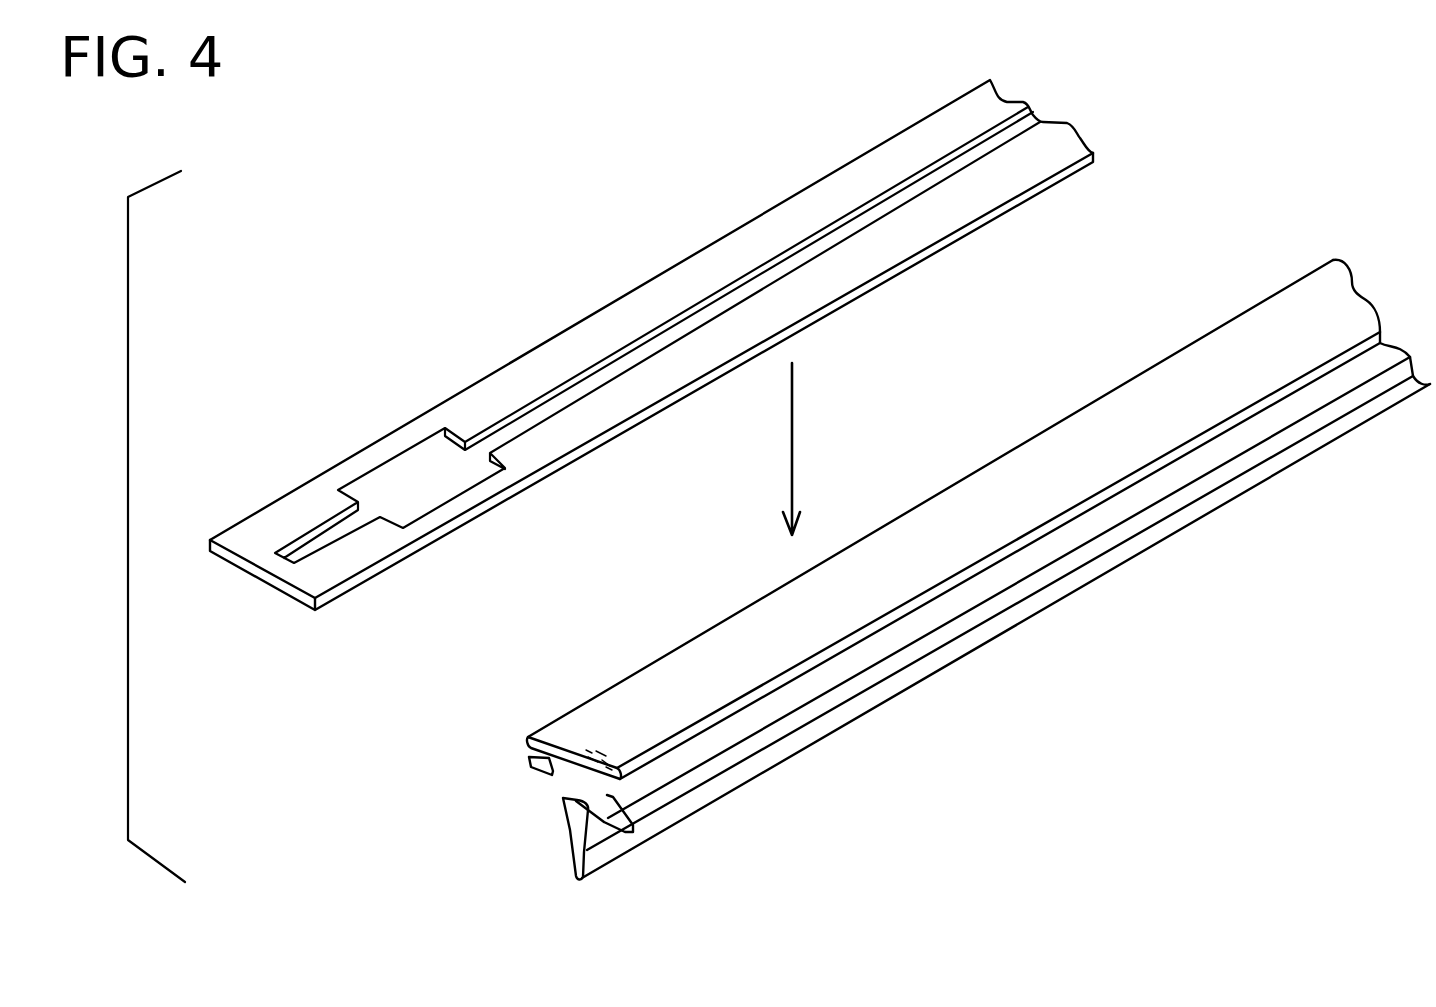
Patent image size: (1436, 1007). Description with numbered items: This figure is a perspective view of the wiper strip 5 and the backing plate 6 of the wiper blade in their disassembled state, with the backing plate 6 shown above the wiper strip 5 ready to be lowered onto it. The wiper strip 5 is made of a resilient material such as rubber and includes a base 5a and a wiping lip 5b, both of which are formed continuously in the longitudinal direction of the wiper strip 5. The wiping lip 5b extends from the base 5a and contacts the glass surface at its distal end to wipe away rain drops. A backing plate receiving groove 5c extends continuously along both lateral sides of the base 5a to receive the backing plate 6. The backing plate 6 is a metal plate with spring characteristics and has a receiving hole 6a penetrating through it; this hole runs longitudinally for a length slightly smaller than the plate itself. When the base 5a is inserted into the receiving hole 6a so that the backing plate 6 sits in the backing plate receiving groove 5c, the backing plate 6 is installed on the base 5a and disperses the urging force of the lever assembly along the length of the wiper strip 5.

The wiper strip 5 is at (969, 571).
The base 5a is at (540, 728).
The wiping lip 5b is at (578, 847).
The backing plate receiving groove 5c is at (677, 753).
The backing plate 6 is at (651, 345).
The receiving hole 6a is at (527, 410).